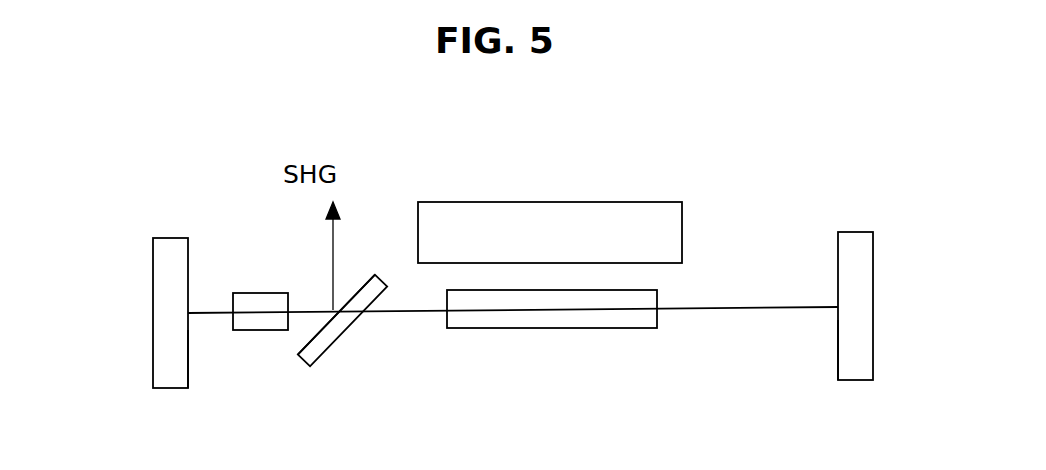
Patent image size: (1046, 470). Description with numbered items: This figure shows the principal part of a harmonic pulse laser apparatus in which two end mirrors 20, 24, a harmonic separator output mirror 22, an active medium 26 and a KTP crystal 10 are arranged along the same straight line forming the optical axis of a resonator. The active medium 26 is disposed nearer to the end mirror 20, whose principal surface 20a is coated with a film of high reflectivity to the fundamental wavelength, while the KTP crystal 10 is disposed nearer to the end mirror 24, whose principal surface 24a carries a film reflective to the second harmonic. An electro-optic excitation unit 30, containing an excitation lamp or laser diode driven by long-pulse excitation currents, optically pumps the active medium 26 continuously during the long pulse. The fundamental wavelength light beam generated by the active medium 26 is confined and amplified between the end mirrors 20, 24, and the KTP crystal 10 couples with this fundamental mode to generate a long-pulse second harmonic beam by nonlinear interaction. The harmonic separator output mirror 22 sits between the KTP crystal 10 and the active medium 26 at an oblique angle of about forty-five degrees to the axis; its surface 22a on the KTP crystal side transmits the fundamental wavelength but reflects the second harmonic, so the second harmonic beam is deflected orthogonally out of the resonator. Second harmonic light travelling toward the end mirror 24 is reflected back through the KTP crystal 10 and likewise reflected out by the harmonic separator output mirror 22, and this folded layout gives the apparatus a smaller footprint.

The KTP crystal 10 is at (257, 323).
The end mirror 20 is at (851, 241).
The principal surface of the end mirror 20a is at (838, 350).
The harmonic separator output mirror 22 is at (335, 332).
The principal surface of the harmonic separator output mirror 22a is at (353, 293).
The end mirror 24 is at (173, 238).
The principal surface of the terminal mirror 24a is at (188, 360).
The active medium 26 is at (545, 318).
The electro-optic excitation unit 30 is at (553, 202).